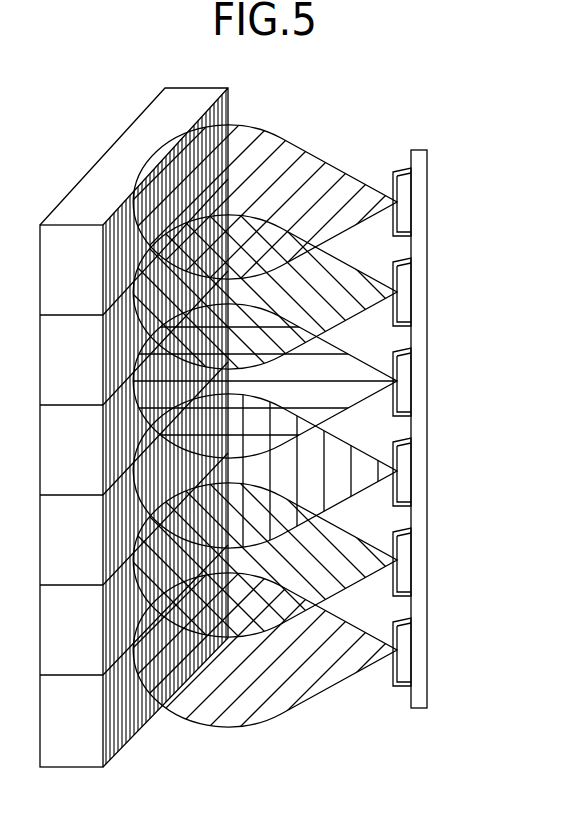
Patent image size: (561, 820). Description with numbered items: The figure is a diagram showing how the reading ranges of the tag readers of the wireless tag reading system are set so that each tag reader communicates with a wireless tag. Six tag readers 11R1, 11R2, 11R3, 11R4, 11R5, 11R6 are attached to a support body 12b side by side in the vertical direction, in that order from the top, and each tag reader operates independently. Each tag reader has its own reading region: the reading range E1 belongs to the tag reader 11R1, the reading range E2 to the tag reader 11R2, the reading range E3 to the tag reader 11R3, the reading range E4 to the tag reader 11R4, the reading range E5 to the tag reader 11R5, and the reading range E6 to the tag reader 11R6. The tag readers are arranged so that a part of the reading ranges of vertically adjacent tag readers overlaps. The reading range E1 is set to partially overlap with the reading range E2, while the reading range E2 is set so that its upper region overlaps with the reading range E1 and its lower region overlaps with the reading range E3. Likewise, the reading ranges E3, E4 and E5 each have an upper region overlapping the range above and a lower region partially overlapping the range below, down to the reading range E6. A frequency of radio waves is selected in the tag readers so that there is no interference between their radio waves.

The support body 12b is at (413, 151).
The tag reader 11R1 is at (405, 190).
The tag reader 11R2 is at (405, 278).
The tag reader 11R3 is at (405, 366).
The tag reader 11R4 is at (405, 462).
The tag reader 11R5 is at (405, 552).
The tag reader 11R6 is at (405, 638).
The reading range E1 is at (378, 171).
The reading range E2 is at (378, 263).
The reading range E3 is at (378, 354).
The reading range E4 is at (378, 454).
The reading range E5 is at (378, 543).
The reading range E6 is at (378, 628).